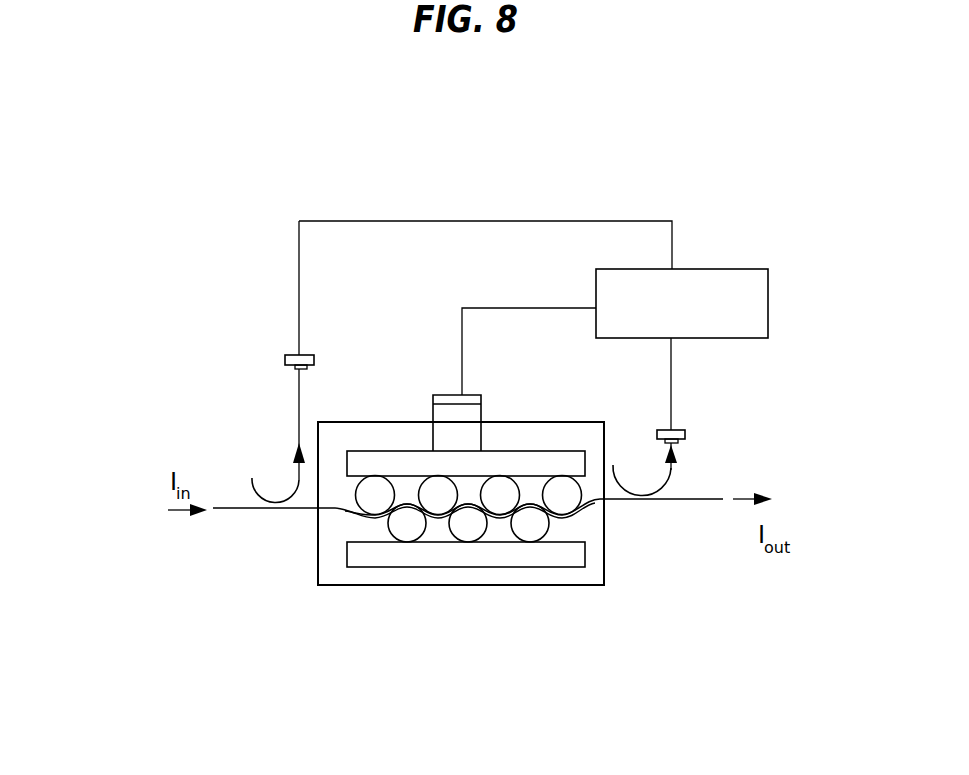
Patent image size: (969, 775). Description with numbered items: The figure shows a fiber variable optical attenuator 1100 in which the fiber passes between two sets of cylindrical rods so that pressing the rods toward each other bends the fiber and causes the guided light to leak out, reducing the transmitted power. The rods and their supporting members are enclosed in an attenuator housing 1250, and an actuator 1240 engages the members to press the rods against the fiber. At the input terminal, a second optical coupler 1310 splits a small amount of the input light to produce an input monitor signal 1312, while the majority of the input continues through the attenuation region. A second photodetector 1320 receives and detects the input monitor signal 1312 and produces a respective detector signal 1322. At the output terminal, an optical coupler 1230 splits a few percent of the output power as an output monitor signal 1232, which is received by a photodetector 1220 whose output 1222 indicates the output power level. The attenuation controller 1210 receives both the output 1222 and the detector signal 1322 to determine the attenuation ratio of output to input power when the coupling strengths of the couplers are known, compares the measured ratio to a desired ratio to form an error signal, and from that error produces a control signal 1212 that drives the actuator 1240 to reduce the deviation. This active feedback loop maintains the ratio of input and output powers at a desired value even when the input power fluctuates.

The fiber variable optical attenuator 1100 is at (327, 533).
The attenuator housing 1250 is at (527, 585).
The actuator 1240 is at (445, 395).
The second optical coupler 1310 is at (280, 510).
The input monitor signal 1312 is at (299, 402).
The second photodetector 1320 is at (285, 357).
The detector signal 1322 is at (492, 221).
The attenuation controller 1210 is at (718, 269).
The control signal 1212 is at (507, 308).
The output of the photodetector 1222 is at (670, 387).
The photodetector 1220 is at (693, 433).
The output monitor signal 1232 is at (673, 470).
The optical coupler 1230 is at (652, 499).